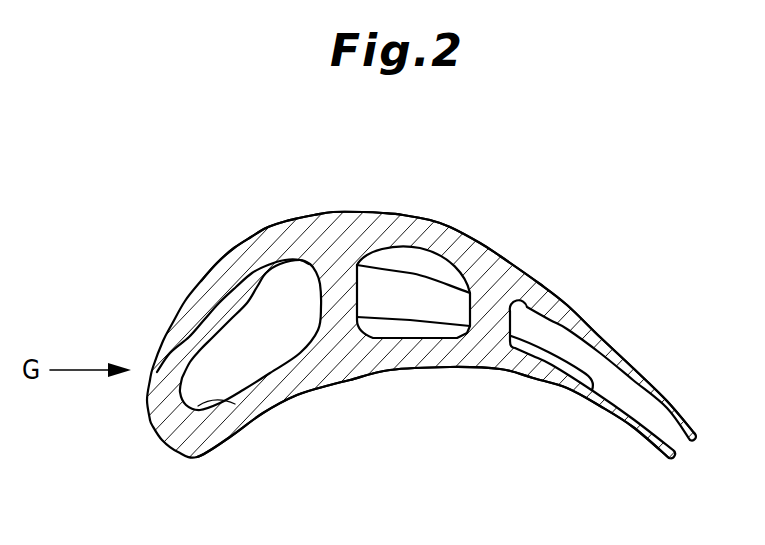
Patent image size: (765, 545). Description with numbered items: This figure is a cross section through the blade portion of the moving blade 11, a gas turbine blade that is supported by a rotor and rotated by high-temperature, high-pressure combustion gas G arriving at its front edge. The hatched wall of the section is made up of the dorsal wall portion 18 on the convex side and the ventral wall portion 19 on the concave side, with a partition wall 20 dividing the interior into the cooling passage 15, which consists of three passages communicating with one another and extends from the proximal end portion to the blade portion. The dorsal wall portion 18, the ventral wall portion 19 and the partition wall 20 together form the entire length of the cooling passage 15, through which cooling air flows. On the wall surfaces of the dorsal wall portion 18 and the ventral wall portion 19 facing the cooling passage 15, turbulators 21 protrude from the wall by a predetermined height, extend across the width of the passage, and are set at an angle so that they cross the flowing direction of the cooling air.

The moving blade 11 is at (124, 280).
The cooling passage 15 is at (281, 287).
The dorsal wall portion 18 is at (480, 243).
The ventral wall portion 19 is at (333, 383).
The partition wall 20 is at (304, 338).
The turbulator 21 is at (229, 300).